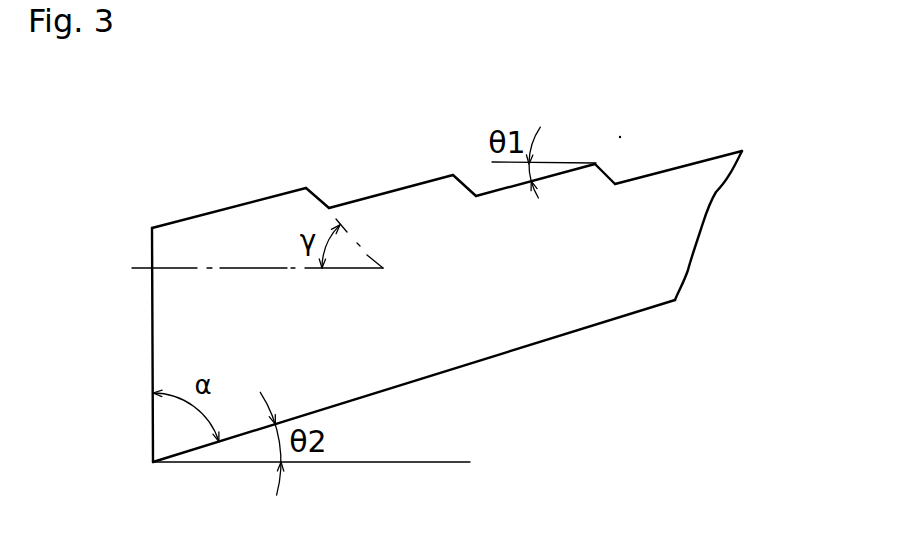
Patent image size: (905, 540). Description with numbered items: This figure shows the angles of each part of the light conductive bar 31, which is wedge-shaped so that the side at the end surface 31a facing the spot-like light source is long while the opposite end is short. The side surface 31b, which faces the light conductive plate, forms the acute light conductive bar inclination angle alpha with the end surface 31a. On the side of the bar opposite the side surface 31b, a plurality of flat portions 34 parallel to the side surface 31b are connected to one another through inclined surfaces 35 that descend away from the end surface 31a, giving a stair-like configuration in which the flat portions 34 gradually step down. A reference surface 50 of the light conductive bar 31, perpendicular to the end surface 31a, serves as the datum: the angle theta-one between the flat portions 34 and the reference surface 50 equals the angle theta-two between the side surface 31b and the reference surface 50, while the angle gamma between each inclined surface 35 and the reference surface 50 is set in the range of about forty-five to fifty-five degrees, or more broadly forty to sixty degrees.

The light conductive bar 31 is at (655, 252).
The end surface 31a is at (152, 341).
The side surface 31b is at (502, 355).
The flat portions 34 is at (253, 201).
The inclined surfaces 35 is at (322, 202).
The reference surface 50 is at (230, 269).